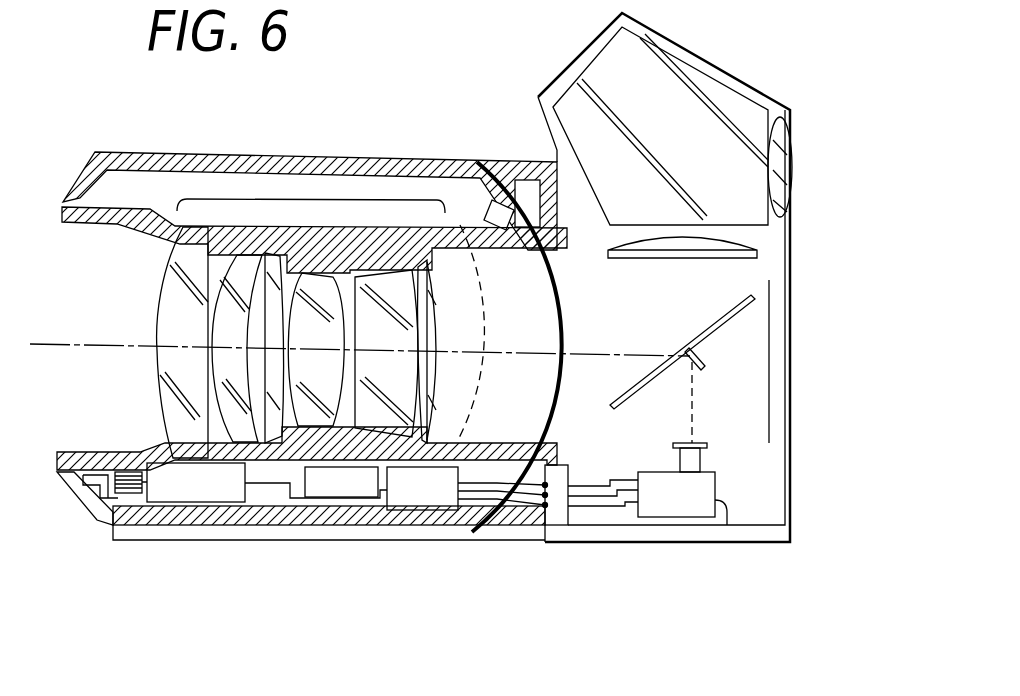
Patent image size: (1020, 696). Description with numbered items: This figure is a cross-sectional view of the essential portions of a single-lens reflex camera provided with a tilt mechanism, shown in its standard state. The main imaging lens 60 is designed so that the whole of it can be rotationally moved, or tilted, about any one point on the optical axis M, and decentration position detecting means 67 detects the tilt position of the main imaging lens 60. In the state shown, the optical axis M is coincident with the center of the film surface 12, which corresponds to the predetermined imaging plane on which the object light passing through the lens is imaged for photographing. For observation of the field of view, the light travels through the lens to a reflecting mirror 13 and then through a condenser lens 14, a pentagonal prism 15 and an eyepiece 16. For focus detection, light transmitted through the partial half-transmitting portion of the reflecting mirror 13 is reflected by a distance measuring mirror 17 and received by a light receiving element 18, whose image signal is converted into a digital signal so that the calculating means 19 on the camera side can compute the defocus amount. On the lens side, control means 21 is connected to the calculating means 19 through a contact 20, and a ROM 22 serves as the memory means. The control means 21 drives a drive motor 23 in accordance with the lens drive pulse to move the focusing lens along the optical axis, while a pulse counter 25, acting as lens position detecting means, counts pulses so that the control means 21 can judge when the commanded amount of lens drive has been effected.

The film surface 12 is at (771, 307).
The reflecting mirror 13 is at (718, 323).
The condenser lens 14 is at (757, 241).
The pentagonal prism 15 is at (700, 67).
The eyepiece 16 is at (793, 133).
The distance measuring mirror 17 is at (703, 362).
The light receiving element 18 is at (703, 443).
The calculating means 19 is at (710, 545).
The contact 20 is at (550, 512).
The control means 21 is at (423, 512).
The ROM 22 is at (352, 498).
The drive motor 23 is at (187, 522).
The pulse counter 25 is at (61, 480).
The main imaging lens 60 is at (316, 199).
The decentration position detecting means 67 is at (476, 163).
The optical axis M is at (80, 347).